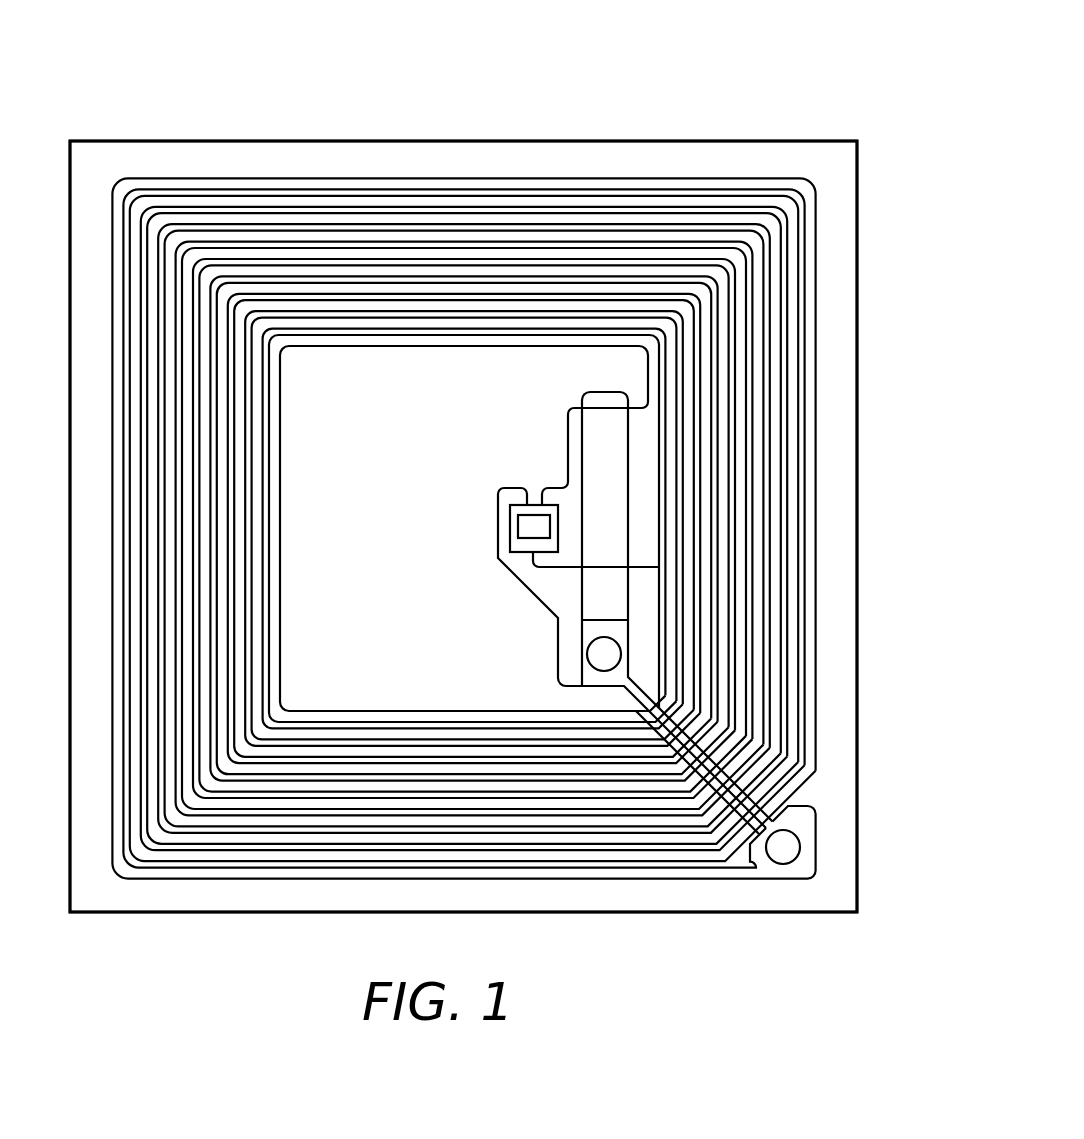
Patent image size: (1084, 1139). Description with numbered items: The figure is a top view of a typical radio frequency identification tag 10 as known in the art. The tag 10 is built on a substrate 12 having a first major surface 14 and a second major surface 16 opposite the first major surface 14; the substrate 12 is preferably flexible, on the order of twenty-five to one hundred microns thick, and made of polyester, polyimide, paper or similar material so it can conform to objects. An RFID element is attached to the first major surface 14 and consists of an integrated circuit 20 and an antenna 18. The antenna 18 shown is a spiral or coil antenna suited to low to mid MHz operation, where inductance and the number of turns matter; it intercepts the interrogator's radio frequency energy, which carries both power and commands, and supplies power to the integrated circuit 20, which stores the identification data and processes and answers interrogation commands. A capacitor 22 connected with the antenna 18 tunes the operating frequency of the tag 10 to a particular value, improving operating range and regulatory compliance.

The RFID tag 10 is at (206, 76).
The substrate 12 is at (737, 148).
The first major surface 14 is at (845, 239).
The second major surface 16 is at (848, 471).
The antenna 18 is at (469, 237).
The integrated circuit 20 is at (530, 527).
The capacitor 22 is at (598, 543).